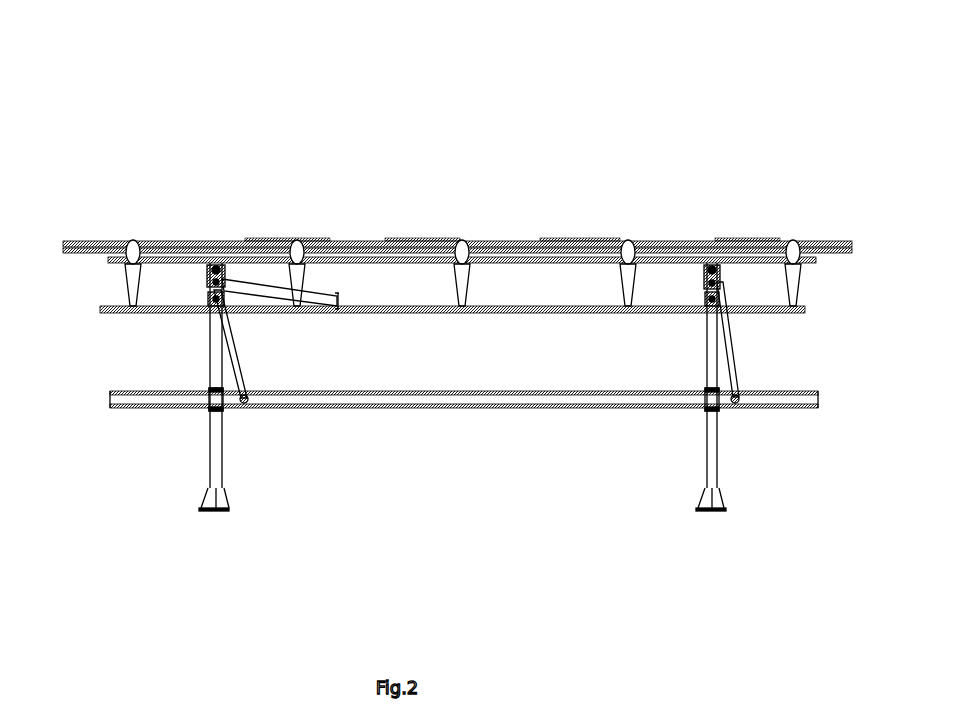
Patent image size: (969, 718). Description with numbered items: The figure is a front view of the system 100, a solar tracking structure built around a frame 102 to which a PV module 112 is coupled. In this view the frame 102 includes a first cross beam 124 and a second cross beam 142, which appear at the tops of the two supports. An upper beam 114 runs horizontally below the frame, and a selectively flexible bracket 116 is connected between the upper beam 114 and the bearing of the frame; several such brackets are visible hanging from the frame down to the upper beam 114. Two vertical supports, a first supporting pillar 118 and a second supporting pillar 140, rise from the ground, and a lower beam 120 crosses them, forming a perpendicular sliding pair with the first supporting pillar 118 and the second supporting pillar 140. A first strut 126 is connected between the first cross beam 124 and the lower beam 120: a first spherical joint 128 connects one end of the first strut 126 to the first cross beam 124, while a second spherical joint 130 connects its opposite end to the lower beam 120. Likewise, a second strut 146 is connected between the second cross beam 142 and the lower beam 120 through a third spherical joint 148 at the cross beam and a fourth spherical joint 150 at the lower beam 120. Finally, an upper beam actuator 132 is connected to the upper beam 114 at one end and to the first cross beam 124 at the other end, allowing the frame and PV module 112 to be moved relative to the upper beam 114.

The system 100 is at (427, 548).
The frame 102 is at (853, 227).
The PV module 112 is at (84, 242).
The upper beam 114 is at (525, 312).
The selectively flexible bracket 116 is at (130, 287).
The first supporting pillar 118 is at (218, 465).
The lower beam 120 is at (498, 408).
The first cross beam 124 is at (206, 240).
The first strut 126 is at (225, 322).
The first spherical joint 128 is at (212, 303).
The second spherical joint 130 is at (247, 405).
The upper beam actuator 132 is at (260, 242).
The second supporting pillar 140 is at (708, 472).
The second cross beam 142 is at (708, 242).
The second strut 146 is at (732, 348).
The third spherical joint 148 is at (705, 292).
The fourth spherical joint 150 is at (737, 404).